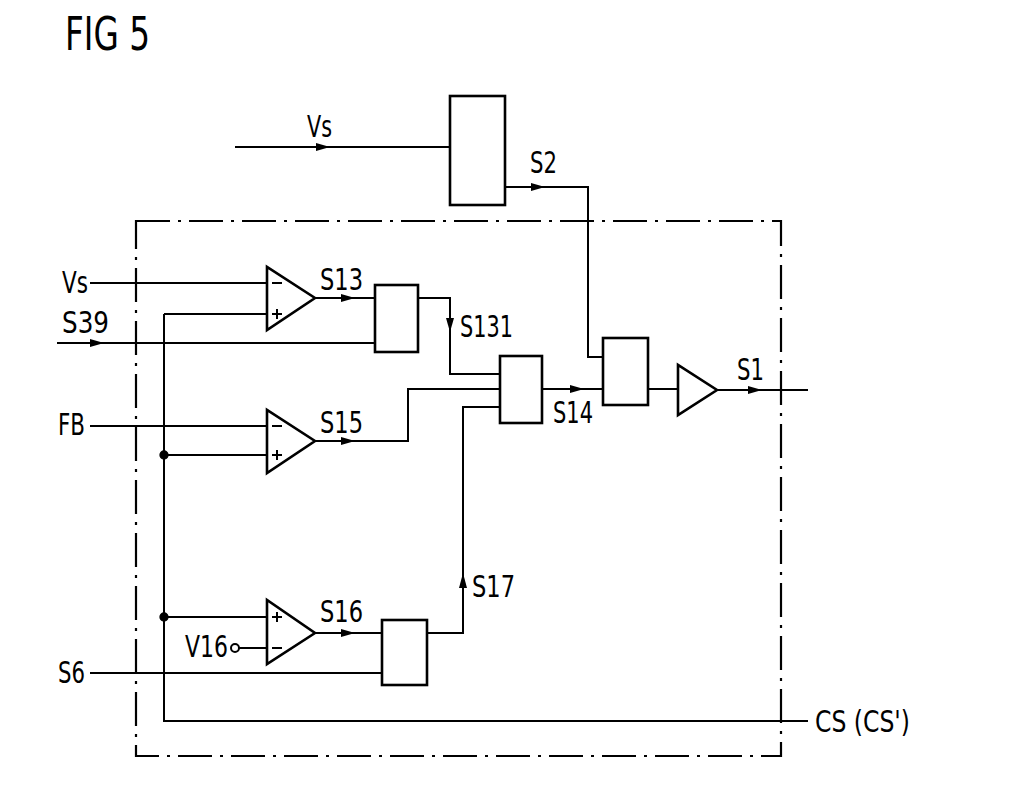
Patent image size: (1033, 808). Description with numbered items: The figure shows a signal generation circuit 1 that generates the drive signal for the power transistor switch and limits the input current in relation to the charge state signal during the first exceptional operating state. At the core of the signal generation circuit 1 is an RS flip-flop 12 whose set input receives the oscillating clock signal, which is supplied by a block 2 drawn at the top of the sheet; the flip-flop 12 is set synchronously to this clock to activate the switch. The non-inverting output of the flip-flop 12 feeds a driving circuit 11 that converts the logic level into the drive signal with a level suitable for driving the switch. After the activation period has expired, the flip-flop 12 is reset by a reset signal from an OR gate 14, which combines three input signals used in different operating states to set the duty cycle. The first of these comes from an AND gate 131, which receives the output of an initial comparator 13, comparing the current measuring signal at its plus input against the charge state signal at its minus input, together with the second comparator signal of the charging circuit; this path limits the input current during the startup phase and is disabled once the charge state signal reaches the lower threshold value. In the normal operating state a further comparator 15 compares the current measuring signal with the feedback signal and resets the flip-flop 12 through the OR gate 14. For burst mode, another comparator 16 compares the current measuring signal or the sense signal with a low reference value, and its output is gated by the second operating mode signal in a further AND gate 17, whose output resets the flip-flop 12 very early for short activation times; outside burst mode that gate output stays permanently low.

The signal generation circuit 1 is at (700, 221).
The supply voltage monitoring unit 2 is at (478, 96).
The driving circuit 11 is at (697, 375).
The RS flip-flop 12 is at (617, 338).
The initial comparator 13 is at (292, 276).
The AND gate 131 is at (398, 285).
The OR gate 14 is at (532, 356).
The comparator 15 is at (295, 457).
The comparator 16 is at (292, 616).
The AND gate 17 is at (400, 620).